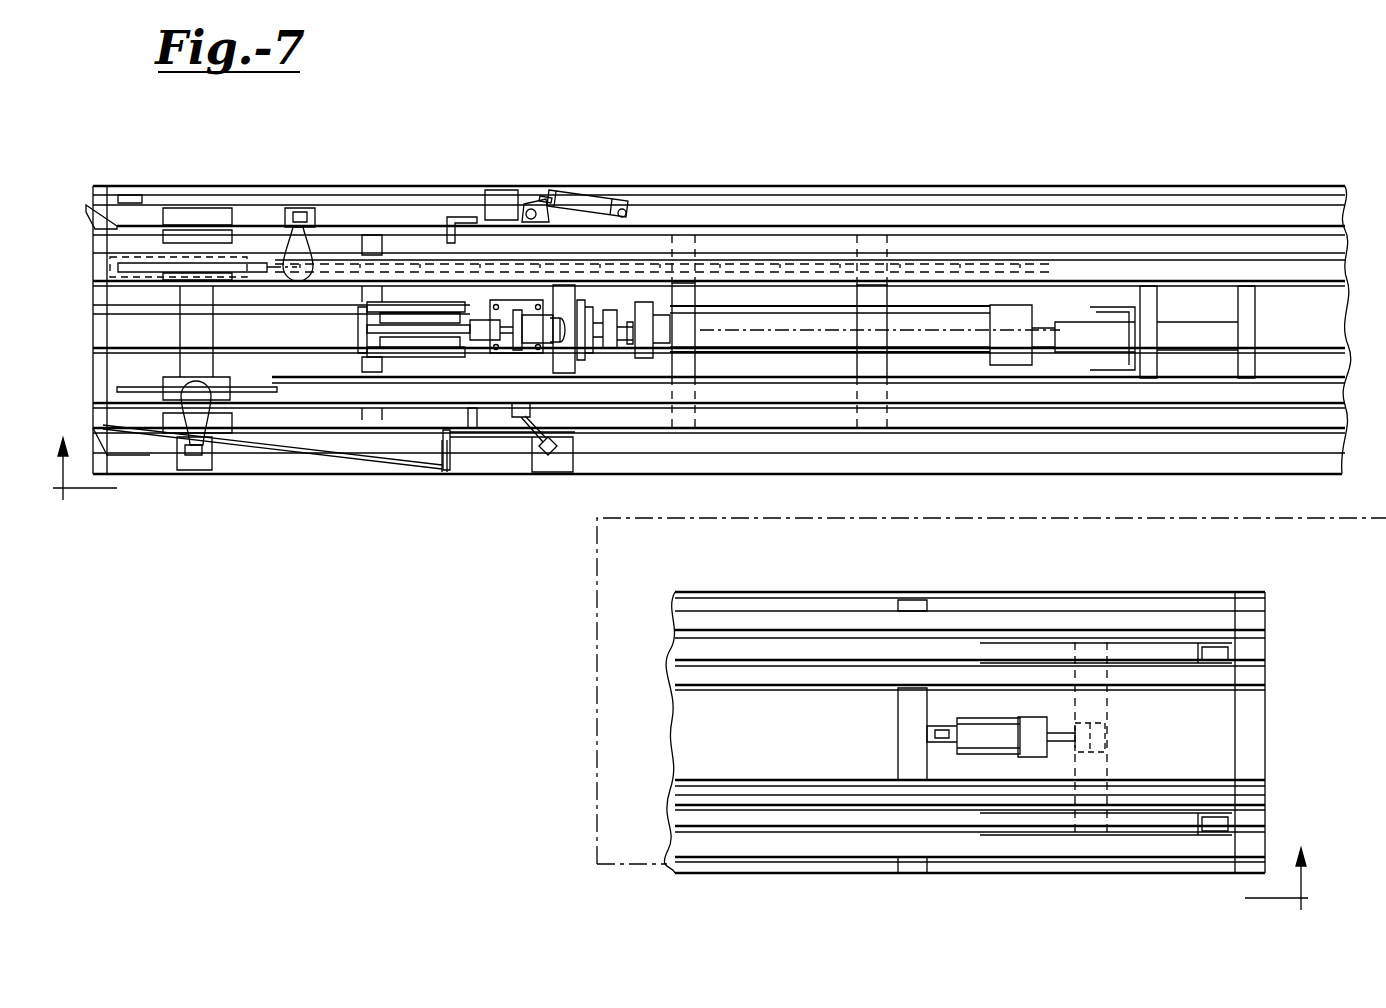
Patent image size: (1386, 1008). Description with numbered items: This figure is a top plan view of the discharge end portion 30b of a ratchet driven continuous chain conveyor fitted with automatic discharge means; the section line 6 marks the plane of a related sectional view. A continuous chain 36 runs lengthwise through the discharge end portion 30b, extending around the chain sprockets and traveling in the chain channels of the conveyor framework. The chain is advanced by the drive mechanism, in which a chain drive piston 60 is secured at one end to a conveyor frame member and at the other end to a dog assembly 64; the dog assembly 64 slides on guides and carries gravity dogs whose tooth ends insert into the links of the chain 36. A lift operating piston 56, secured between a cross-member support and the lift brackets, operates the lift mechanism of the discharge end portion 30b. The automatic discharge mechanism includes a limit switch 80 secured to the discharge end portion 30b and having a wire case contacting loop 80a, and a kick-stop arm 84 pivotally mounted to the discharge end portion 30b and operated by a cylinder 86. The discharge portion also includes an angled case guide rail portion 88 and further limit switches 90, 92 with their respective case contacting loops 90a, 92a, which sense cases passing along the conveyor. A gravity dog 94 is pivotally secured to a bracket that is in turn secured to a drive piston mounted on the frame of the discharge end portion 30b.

The discharge end portion 30b is at (733, 174).
The continuous chain 36 is at (320, 255).
The lift operating piston 56 is at (1000, 722).
The chain drive piston 60 is at (953, 305).
The dog assembly 64 is at (1256, 352).
The limit switch 80 is at (551, 470).
The wire case contacting loop 80a is at (518, 412).
The kick-stop arm 84 is at (470, 215).
The cylinder 86 is at (601, 196).
The angled case guide rail portion 88 is at (401, 468).
The limit switch 90 is at (296, 207).
The case contacting loop 90a is at (283, 237).
The limit switch 92 is at (204, 470).
The case contacting loop 92a is at (186, 390).
The gravity dog 94 is at (359, 321).
The section line 6- 6 is at (680, 660).